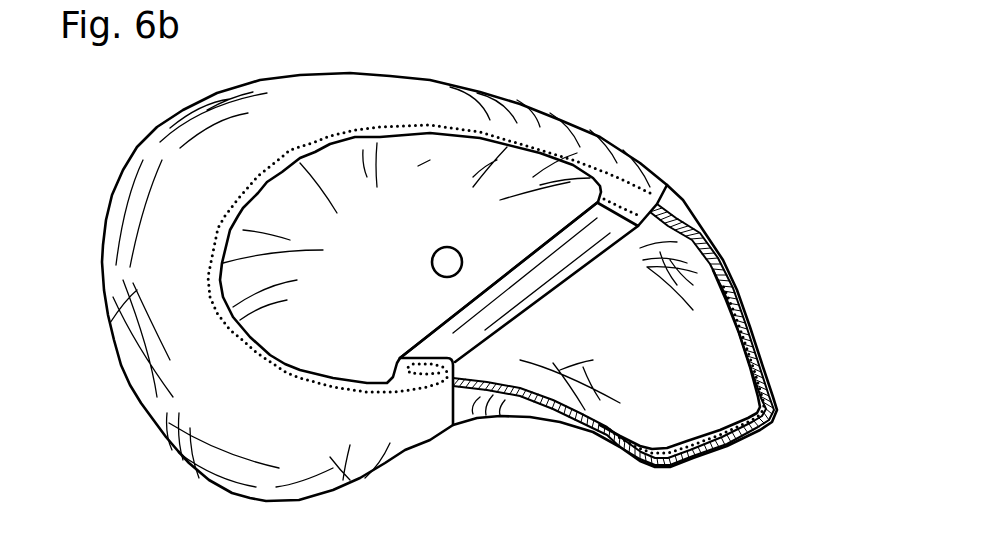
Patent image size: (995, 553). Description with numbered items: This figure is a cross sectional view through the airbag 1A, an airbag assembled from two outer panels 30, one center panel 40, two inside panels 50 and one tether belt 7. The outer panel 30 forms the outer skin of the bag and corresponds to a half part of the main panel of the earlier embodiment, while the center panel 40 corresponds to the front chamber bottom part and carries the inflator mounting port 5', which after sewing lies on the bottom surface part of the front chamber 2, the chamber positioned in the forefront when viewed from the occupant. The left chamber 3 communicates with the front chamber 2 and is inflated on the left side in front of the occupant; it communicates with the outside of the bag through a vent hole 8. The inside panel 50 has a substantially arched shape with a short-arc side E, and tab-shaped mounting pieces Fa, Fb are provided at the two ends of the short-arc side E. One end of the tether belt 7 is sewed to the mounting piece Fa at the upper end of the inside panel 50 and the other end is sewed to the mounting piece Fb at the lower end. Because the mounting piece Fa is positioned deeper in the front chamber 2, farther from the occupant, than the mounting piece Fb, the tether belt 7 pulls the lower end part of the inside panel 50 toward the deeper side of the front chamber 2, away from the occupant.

The airbag 1A is at (699, 109).
The inside panel 50 is at (398, 100).
The outer panel 30 is at (535, 176).
The center panel 40 is at (705, 224).
The inflator mounting port 5' is at (687, 402).
The short-arc side E is at (260, 189).
The left chamber 3 is at (364, 288).
The vent hole 8 is at (446, 246).
The tether belt 7 is at (570, 287).
The front chamber 2 is at (681, 401).
The mounting piece Fa is at (595, 197).
The mounting piece Fb is at (397, 370).